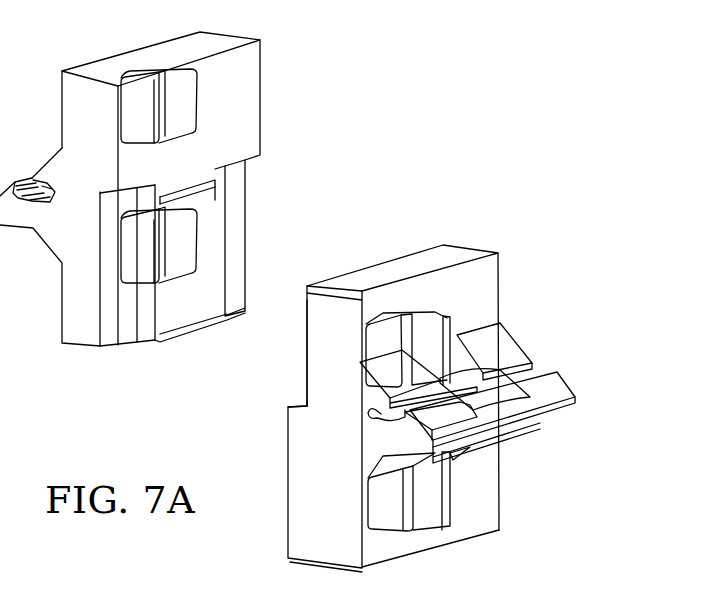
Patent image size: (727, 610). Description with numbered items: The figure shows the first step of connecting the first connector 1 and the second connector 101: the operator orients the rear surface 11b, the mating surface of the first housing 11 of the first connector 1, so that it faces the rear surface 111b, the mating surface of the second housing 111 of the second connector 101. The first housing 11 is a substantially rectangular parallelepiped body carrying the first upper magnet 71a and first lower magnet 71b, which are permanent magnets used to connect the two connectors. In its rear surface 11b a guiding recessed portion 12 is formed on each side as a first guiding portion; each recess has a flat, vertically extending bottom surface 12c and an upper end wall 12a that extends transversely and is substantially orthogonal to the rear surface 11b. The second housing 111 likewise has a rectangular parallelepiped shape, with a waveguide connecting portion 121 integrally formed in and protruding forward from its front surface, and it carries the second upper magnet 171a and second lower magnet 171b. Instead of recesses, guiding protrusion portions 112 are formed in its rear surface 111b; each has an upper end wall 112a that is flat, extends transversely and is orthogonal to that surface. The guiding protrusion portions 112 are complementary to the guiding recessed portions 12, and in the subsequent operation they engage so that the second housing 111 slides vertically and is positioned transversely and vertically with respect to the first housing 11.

The first connector 1 is at (275, 34).
The first housing 11 is at (262, 68).
The rear surface 11b is at (253, 123).
The guiding recessed portion 12 is at (118, 343).
The upper end wall 12a is at (127, 180).
The bottom surface 12c is at (240, 237).
The first upper magnet 71a is at (182, 90).
The first lower magnet 71b is at (178, 265).
The second connector 101 is at (513, 242).
The second housing 111 is at (463, 248).
The rear surface 111b is at (307, 338).
The guiding protrusion portion 112 is at (288, 472).
The upper end wall 112a is at (302, 407).
The waveguide connecting portion 121 is at (575, 396).
The second upper magnet 171a is at (432, 337).
The second lower magnet 171b is at (427, 512).